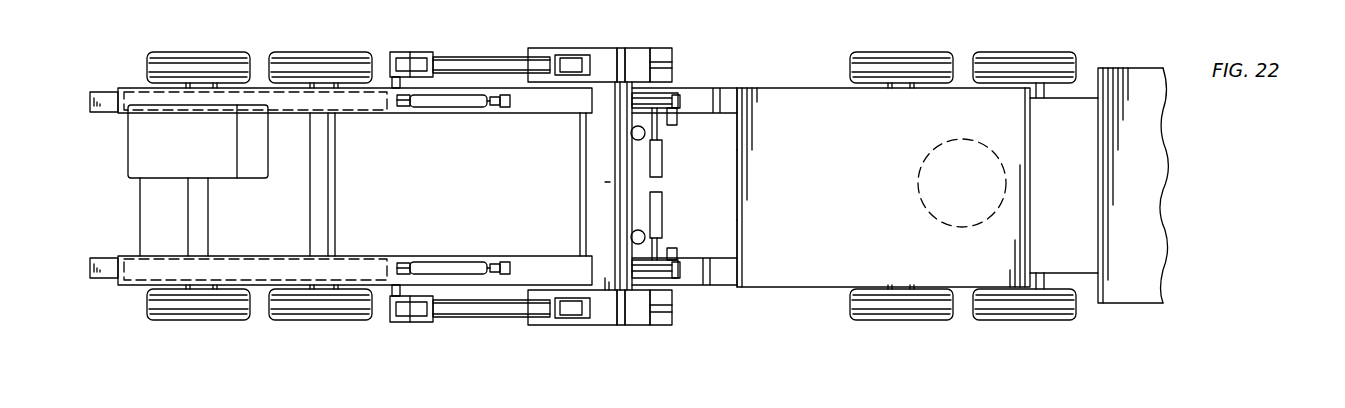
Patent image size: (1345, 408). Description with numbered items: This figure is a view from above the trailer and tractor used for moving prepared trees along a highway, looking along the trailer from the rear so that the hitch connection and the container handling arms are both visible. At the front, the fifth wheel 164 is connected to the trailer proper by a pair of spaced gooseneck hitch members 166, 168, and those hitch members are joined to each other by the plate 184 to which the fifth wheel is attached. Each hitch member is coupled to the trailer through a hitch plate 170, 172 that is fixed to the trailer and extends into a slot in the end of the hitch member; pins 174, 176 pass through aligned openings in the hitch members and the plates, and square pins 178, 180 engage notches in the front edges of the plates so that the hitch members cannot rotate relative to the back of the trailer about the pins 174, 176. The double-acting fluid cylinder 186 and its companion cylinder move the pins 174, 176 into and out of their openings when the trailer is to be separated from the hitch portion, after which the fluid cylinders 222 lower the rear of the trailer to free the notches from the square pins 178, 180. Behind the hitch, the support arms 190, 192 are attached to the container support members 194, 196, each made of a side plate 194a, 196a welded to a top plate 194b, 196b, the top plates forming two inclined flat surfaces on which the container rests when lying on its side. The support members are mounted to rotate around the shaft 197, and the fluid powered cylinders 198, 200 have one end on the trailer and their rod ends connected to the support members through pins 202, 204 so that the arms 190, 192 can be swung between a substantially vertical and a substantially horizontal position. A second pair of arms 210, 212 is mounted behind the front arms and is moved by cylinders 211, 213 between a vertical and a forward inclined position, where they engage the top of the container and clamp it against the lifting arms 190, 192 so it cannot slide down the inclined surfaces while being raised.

The fifth wheel 164 is at (938, 213).
The gooseneck hitch member 166 is at (730, 90).
The gooseneck hitch member 168 is at (725, 277).
The hitch plate 170 is at (675, 96).
The hitch plate 172 is at (679, 278).
The pin 174 is at (677, 122).
The pin 176 is at (671, 245).
The square pin 178 is at (745, 135).
The square pin 180 is at (678, 253).
The plate 184 is at (742, 170).
The double-acting fluid cylinder 186 is at (742, 190).
The support arm 190 is at (672, 52).
The support arm 192 is at (672, 325).
The container support member 194 is at (619, 39).
The side plate 194a is at (543, 48).
The top plate 194b is at (638, 62).
The container support member 196 is at (620, 325).
The side plate 196a is at (537, 324).
The top plate 196b is at (645, 325).
The shaft 197 is at (572, 190).
The fluid powered cylinder 198 is at (442, 55).
The fluid powered cylinder 200 is at (445, 317).
The pin 202 is at (574, 55).
The pin 204 is at (578, 318).
The arm 210 is at (503, 108).
The cylinder 211 is at (417, 110).
The arm 212 is at (503, 262).
The cylinder 213 is at (425, 262).
The fluid cylinder 222 is at (630, 133).